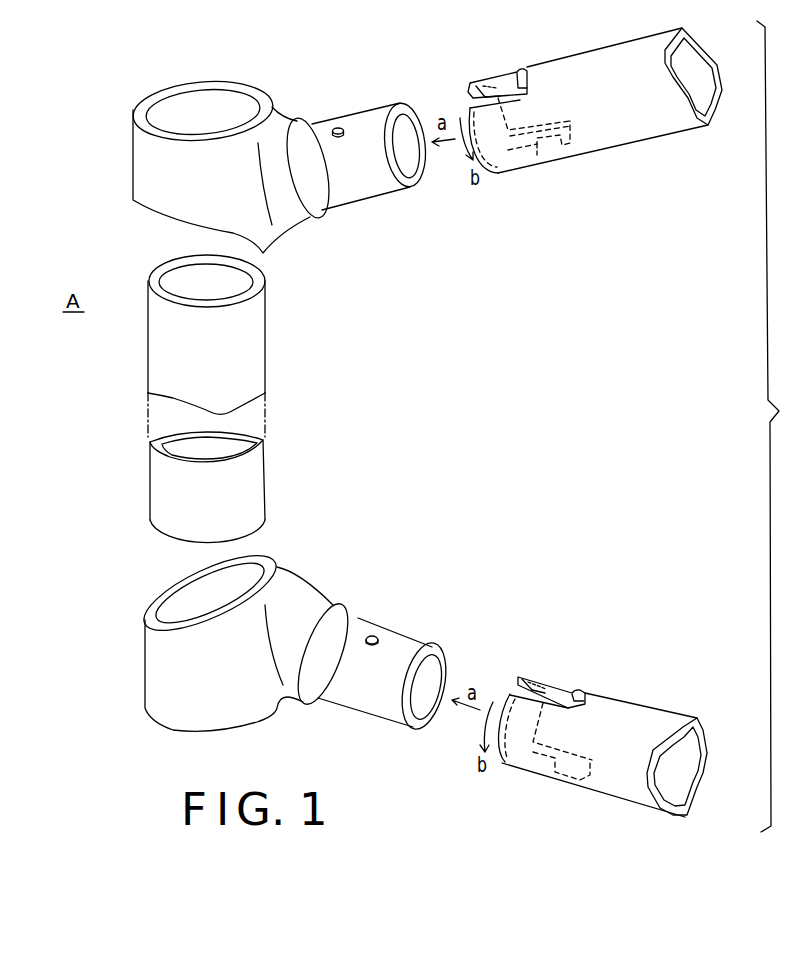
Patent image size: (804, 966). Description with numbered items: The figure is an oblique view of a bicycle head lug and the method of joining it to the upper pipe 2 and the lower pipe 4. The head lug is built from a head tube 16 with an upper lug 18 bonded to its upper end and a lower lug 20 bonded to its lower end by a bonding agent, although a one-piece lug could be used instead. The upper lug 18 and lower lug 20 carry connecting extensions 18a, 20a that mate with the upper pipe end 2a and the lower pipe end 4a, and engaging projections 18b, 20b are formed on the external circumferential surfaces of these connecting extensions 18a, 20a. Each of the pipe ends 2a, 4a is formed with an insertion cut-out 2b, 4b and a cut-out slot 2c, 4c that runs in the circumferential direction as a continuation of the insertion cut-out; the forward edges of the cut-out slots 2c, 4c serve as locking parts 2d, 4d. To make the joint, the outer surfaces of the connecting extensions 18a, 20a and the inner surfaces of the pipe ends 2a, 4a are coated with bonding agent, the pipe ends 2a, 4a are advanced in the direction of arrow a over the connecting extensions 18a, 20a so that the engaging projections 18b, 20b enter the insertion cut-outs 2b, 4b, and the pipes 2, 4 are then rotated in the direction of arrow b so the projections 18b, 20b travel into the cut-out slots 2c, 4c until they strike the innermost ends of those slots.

The upper pipe 2 is at (577, 98).
The upper pipe end 2a is at (563, 65).
The insertion cut-out 2b is at (473, 83).
The cut-out slot 2c is at (525, 67).
The locking part 2d is at (513, 73).
The lower pipe 4 is at (598, 740).
The lower pipe end 4a is at (620, 712).
The insertion cut-out 4b is at (524, 672).
The cut-out slot 4c is at (577, 692).
The locking part 4d is at (570, 688).
The head tube 16 is at (153, 350).
The upper lug 18 is at (152, 178).
The connecting extension 18a is at (373, 118).
The engaging projection 18b is at (337, 126).
The lower lug 20 is at (158, 675).
The connecting extension 20a is at (377, 698).
The engaging projection 20b is at (375, 637).